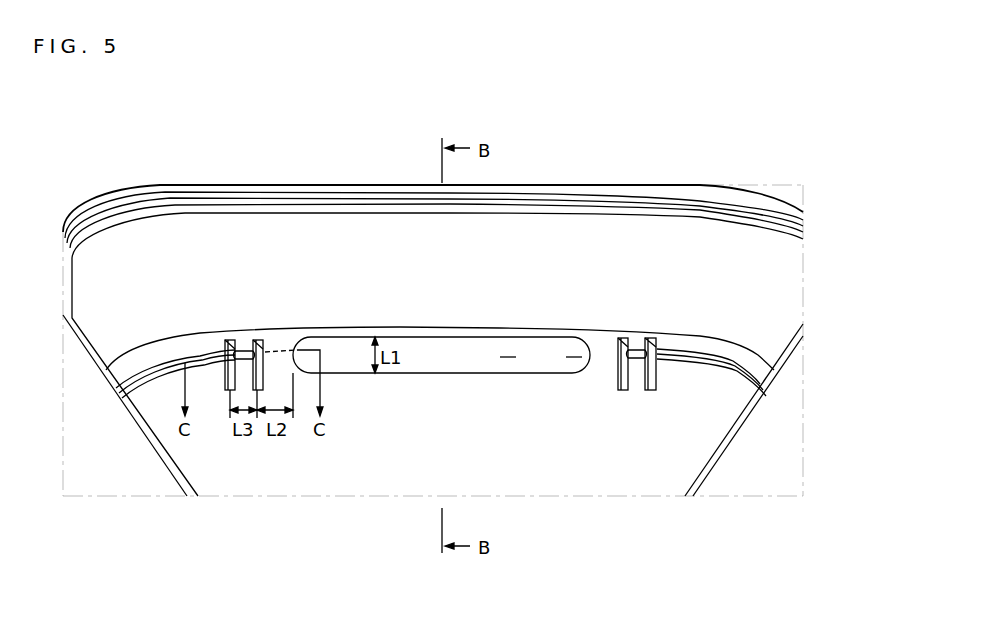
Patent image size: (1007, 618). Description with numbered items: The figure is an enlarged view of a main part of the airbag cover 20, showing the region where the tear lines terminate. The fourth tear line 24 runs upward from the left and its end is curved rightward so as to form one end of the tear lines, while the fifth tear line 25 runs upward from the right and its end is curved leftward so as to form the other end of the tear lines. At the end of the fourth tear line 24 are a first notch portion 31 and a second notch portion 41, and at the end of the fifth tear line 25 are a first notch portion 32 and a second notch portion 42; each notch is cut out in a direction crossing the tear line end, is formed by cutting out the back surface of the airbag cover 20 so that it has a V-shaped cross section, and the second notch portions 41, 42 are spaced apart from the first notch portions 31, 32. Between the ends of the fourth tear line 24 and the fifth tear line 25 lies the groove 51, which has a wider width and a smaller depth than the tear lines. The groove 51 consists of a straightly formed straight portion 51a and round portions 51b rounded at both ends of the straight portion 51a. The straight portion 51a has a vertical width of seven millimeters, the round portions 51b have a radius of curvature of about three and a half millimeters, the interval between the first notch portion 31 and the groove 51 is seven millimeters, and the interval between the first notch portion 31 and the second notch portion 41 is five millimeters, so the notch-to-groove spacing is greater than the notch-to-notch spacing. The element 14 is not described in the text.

The bumper body panel 14 is at (580, 470).
The airbag cover 20 is at (746, 175).
The fourth tear line 24 is at (174, 360).
The fifth tear line 25 is at (730, 366).
The first notch portion 31 is at (255, 340).
The second notch portion 41 is at (230, 340).
The first notch portion 32 is at (620, 338).
The second notch portion 42 is at (650, 338).
The groove 51 is at (592, 137).
The straight portion 51a is at (505, 355).
The round portions 51b is at (571, 355).